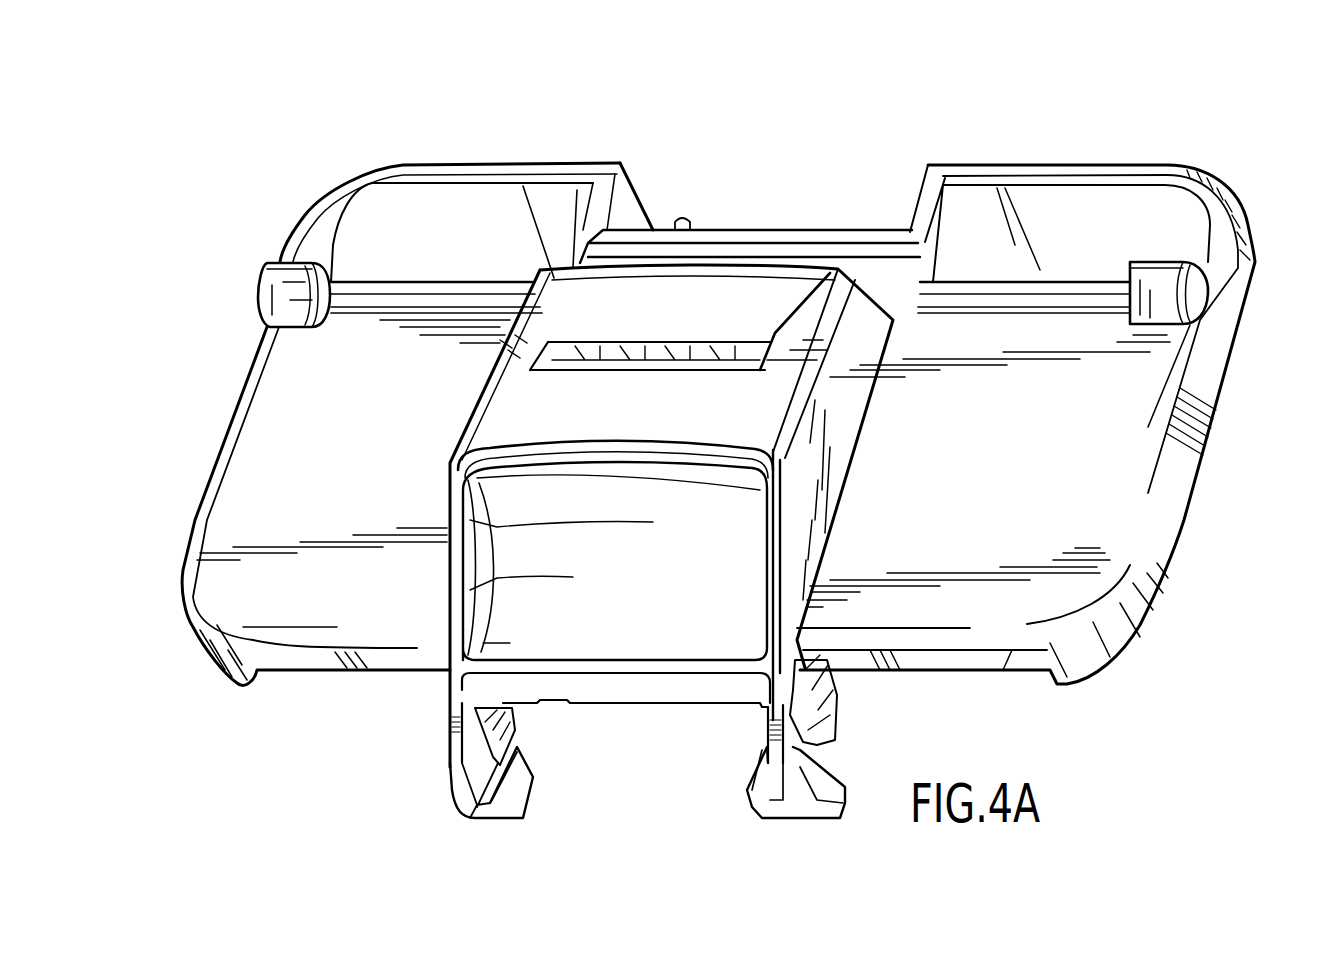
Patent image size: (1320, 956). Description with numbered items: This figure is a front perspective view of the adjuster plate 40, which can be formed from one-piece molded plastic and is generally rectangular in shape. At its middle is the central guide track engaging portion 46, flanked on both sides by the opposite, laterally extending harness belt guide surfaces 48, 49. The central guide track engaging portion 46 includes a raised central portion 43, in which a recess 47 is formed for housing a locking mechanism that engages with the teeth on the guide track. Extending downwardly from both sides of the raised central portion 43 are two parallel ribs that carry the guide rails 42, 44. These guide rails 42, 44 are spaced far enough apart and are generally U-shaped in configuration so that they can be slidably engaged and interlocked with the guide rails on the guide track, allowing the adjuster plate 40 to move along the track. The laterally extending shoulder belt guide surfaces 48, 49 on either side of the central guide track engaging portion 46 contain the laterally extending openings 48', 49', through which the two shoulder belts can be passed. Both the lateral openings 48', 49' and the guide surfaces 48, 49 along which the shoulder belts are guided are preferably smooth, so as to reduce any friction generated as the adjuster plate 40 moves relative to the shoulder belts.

The adjuster plate 40 is at (1258, 178).
The guide rail 42 is at (523, 780).
The raised central portion 43 is at (780, 402).
The guide rail 44 is at (773, 810).
The central guide track engaging portion 46 is at (523, 393).
The recess 47 is at (737, 360).
The harness belt guide surface 48 is at (1035, 424).
The lateral opening 48' is at (1150, 210).
The harness belt guide surface 49 is at (417, 424).
The lateral opening 49' is at (332, 234).